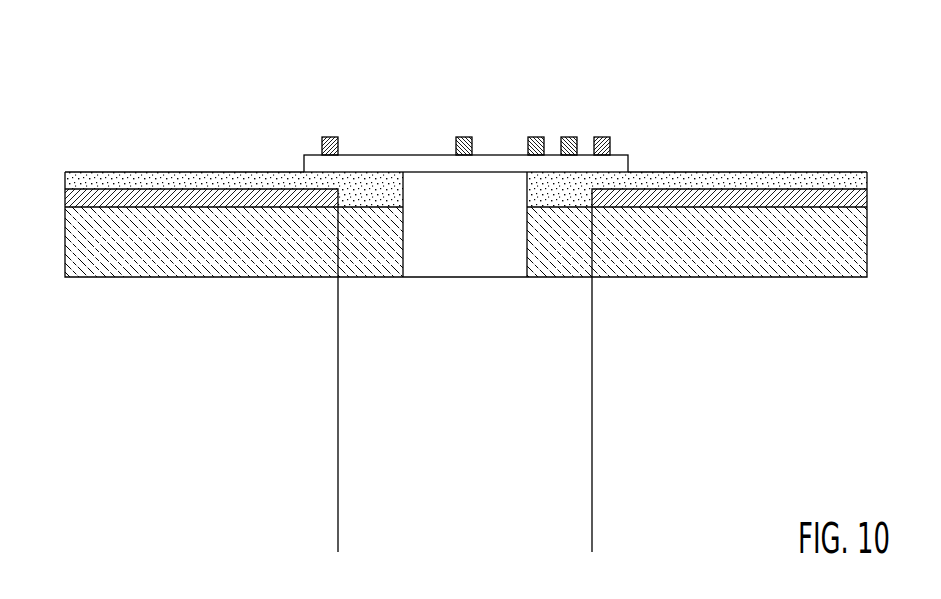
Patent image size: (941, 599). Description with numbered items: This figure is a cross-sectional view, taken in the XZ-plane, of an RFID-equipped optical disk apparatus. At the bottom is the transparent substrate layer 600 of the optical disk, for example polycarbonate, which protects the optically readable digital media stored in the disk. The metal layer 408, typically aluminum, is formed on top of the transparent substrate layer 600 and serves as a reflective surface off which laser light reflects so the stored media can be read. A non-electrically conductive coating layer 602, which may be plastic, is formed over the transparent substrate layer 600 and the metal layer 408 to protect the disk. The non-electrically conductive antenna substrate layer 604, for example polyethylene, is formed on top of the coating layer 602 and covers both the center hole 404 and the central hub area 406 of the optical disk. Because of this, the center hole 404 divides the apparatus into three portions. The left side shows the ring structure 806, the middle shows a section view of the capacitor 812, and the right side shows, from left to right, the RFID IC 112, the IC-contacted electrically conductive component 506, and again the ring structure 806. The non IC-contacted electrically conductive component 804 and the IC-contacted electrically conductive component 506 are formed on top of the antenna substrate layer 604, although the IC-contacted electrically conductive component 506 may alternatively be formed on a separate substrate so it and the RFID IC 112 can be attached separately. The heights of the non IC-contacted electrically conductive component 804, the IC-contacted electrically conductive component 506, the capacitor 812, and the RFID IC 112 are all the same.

The transparent substrate layer 600 is at (101, 267).
The coating layer 602 is at (83, 177).
The metal layer 408 is at (65, 197).
The center hole 404 is at (473, 257).
The central hub area 406 is at (383, 462).
The antenna substrate layer 604 is at (304, 160).
The ring structure 806 is at (322, 147).
The non IC-contacted electrically conductive component 804 is at (457, 137).
The capacitor 812 is at (464, 137).
The RFID IC 112 is at (537, 137).
The IC-contacted electrically conductive component 506 is at (570, 137).